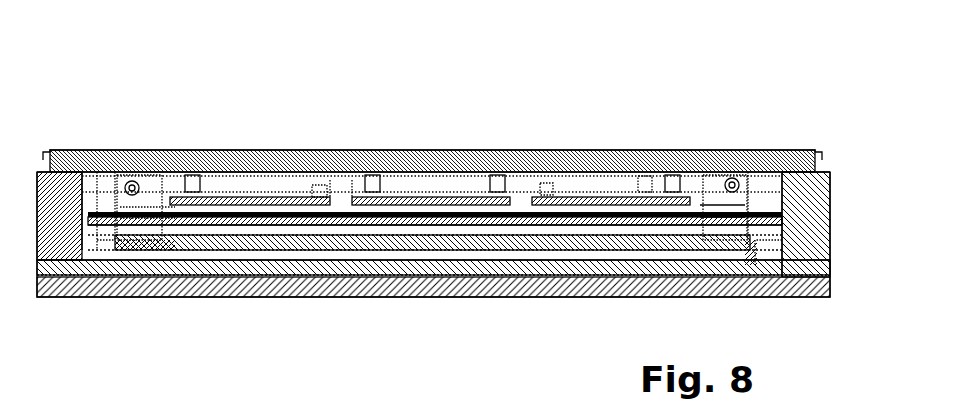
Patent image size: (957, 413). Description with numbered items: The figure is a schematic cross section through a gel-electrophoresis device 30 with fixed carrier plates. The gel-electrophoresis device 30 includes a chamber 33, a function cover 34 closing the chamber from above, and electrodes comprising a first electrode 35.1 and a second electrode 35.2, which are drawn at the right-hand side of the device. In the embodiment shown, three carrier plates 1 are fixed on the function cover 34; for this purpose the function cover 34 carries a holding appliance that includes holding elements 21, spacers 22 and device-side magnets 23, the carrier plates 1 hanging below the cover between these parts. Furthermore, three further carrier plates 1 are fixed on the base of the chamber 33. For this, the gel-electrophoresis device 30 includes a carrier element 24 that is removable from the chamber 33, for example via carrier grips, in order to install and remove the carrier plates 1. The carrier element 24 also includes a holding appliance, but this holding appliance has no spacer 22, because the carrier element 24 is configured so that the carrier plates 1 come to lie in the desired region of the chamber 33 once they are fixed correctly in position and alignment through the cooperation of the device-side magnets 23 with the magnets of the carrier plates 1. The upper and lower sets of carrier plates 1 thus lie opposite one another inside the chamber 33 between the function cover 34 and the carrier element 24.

The carrier plate 1 is at (275, 195).
The holding element 21 is at (176, 166).
The spacer 22 is at (196, 175).
The device-side magnet 23 is at (193, 192).
The carrier element 24 is at (128, 240).
The gel-electrophoresis device 30 is at (805, 97).
The chamber 33 is at (343, 180).
The function cover 34 is at (645, 176).
The first electrode 35.1 is at (737, 205).
The second electrode 35.2 is at (737, 217).